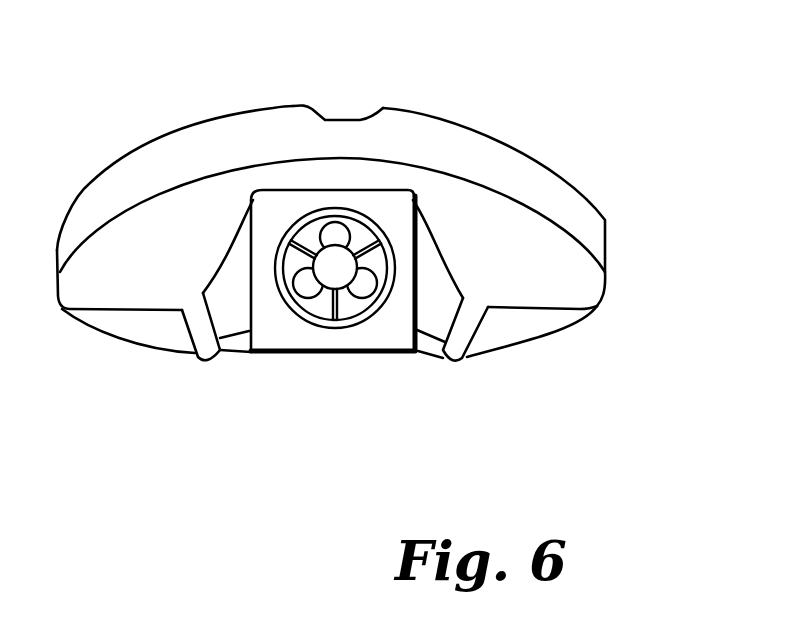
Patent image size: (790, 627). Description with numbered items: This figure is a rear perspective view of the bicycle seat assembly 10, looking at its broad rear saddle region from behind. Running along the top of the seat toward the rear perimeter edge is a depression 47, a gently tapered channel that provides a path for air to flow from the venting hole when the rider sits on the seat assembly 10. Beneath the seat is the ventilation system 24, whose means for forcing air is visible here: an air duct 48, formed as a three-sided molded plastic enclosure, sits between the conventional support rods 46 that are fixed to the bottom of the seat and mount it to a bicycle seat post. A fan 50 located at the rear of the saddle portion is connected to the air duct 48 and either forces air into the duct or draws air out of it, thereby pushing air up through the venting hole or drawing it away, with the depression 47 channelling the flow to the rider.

The seat assembly 10 is at (602, 169).
The depression 47 is at (335, 118).
The air duct 48 is at (273, 332).
The ventilation system 24 is at (337, 366).
The fan 50 is at (360, 290).
The support rods 46 is at (458, 333).